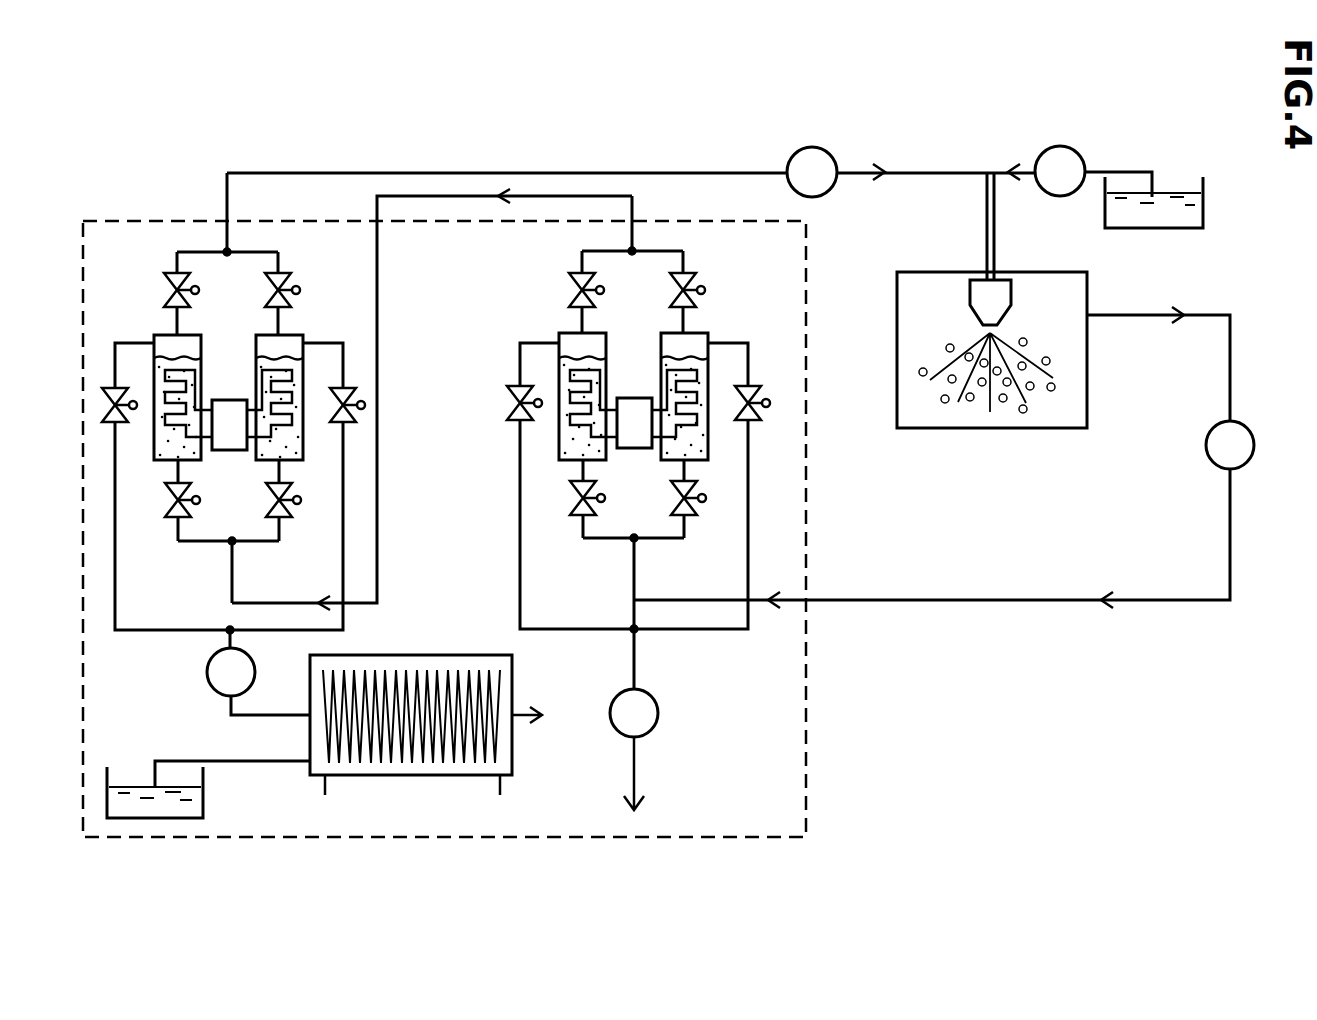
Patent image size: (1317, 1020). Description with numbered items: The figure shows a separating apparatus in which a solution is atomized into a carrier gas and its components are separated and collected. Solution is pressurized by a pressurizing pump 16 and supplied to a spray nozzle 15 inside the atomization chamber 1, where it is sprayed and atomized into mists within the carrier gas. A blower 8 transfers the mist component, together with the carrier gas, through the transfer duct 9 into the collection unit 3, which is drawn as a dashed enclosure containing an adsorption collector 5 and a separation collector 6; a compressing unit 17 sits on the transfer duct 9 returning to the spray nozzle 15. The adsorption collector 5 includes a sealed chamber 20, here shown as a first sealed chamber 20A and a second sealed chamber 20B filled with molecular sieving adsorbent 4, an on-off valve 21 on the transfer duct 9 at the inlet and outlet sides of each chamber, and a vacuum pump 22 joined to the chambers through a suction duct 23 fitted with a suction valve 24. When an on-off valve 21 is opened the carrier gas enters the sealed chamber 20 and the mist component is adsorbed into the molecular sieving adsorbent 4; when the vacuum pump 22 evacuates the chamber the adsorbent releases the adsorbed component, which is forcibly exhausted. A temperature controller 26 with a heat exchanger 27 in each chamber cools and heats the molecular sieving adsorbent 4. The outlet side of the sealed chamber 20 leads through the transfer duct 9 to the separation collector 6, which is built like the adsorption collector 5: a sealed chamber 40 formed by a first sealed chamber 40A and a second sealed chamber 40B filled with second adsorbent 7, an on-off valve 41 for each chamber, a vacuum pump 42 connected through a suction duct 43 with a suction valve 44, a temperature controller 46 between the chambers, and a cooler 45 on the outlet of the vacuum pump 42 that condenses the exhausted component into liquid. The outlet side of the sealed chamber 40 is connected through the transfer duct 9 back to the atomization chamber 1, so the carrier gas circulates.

The atomization chamber 1 is at (990, 430).
The collection unit 3 is at (806, 732).
The molecular sieving adsorbent 4 is at (560, 452).
The adsorption collector 5 is at (783, 368).
The separation collector 6 is at (134, 279).
The second adsorbent 7 is at (187, 462).
The blower 8 is at (1205, 447).
The transfer duct 9 is at (377, 258).
The spray nozzle 15 is at (995, 297).
The pressurizing pump 16 is at (1075, 148).
The compressing unit 17 is at (823, 148).
The sealed chamber 20 is at (805, 110).
The first sealed chamber 20A is at (707, 378).
The second sealed chamber 20B is at (598, 335).
The on-off valve 21 is at (566, 290).
The vacuum pump 22 is at (658, 712).
The suction duct 23 is at (519, 575).
The suction valve 24 is at (507, 405).
The temperature controller 26 is at (630, 418).
The heat exchanger 27 is at (565, 380).
The sealed chamber 40 is at (278, 133).
The first sealed chamber 40A is at (298, 335).
The second sealed chamber 40B is at (157, 335).
The on-off valve 41 is at (200, 293).
The vacuum pump 42 is at (208, 682).
The suction duct 43 is at (115, 603).
The suction valve 44 is at (118, 424).
The cooler 45 is at (378, 813).
The temperature controller 46 is at (233, 440).